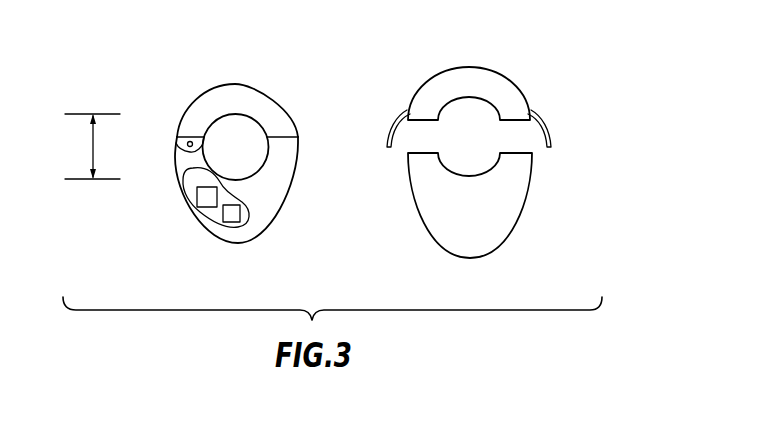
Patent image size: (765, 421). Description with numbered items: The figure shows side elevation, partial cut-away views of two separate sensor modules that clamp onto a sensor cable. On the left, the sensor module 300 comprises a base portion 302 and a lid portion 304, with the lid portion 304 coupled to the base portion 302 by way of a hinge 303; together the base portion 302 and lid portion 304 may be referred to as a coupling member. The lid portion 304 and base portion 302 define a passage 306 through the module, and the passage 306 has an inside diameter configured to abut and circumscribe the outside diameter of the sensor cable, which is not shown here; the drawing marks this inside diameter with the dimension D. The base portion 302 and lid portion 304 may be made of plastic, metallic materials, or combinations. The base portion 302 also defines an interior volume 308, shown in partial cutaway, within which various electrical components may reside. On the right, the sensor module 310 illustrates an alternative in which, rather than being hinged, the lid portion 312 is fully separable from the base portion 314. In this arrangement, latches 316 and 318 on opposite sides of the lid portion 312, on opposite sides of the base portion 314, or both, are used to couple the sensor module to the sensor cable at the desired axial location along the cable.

The left sensor module 300 is at (215, 63).
The base portion 302 is at (262, 220).
The hinge 303 is at (187, 147).
The lid portion 304 is at (262, 102).
The passage 306 is at (232, 138).
The interior volume 308 is at (213, 213).
The right sensor module 310 is at (540, 70).
The lid portion 312 is at (518, 98).
The base portion 314 is at (518, 195).
The latch 316 is at (540, 120).
The latch 318 is at (390, 122).
The diameter dimension D is at (92, 140).